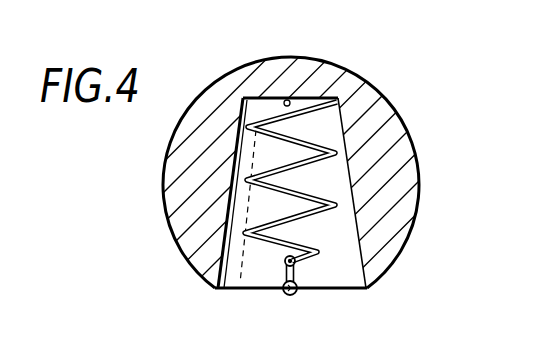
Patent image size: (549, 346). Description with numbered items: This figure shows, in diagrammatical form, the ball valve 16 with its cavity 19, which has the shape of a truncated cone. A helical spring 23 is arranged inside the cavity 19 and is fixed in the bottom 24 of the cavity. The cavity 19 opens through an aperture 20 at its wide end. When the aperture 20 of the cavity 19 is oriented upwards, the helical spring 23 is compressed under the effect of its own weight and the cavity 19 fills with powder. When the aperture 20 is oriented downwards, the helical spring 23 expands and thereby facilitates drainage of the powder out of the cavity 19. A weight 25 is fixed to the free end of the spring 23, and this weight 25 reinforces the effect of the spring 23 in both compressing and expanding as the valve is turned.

The ball valve 16 is at (378, 117).
The cavity 19 is at (247, 155).
The aperture 20 is at (257, 290).
The helical spring 23 is at (298, 215).
The bottom 24 is at (273, 96).
The weight 25 is at (297, 295).